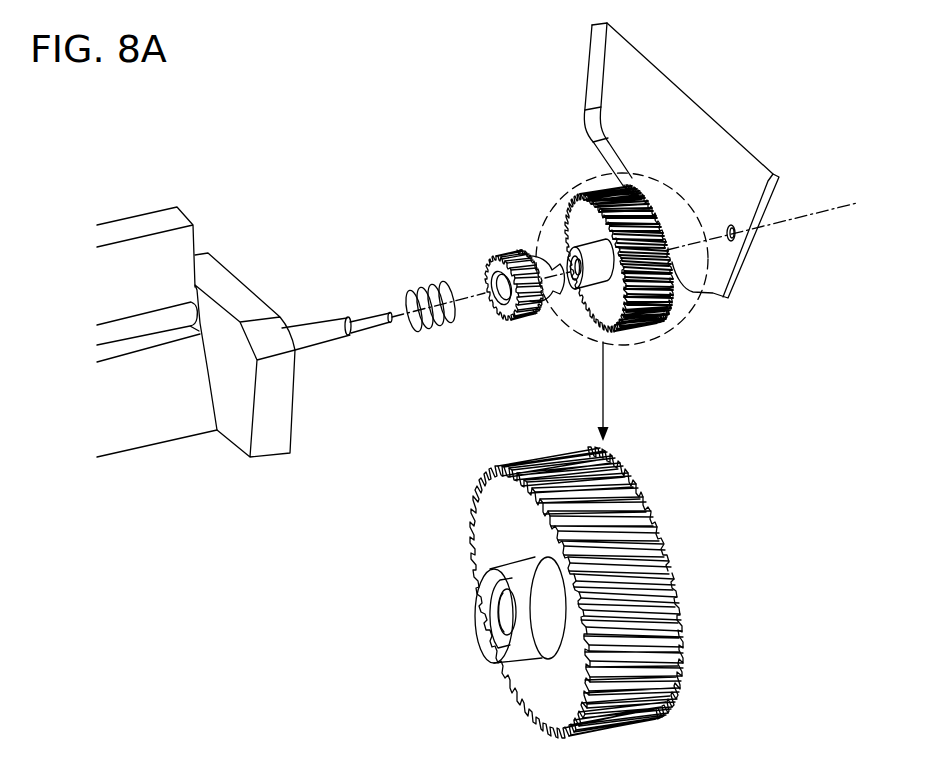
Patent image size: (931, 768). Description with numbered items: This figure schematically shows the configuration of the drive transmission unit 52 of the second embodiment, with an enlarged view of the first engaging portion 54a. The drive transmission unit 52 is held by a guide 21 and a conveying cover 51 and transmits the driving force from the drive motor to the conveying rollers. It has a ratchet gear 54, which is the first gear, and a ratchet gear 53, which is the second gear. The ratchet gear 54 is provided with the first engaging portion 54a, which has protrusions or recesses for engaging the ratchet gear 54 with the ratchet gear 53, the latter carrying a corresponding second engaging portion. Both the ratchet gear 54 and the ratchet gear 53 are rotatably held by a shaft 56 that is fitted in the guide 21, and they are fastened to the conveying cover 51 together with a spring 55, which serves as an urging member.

The guide 21 is at (273, 437).
The conveying cover 51 is at (613, 63).
The drive transmission unit 52 is at (436, 116).
The ratchet gear 53 is at (506, 258).
The ratchet gear 54 is at (640, 313).
The first engaging portion 54a is at (528, 577).
The spring 55 is at (414, 292).
The shaft 56 is at (325, 333).